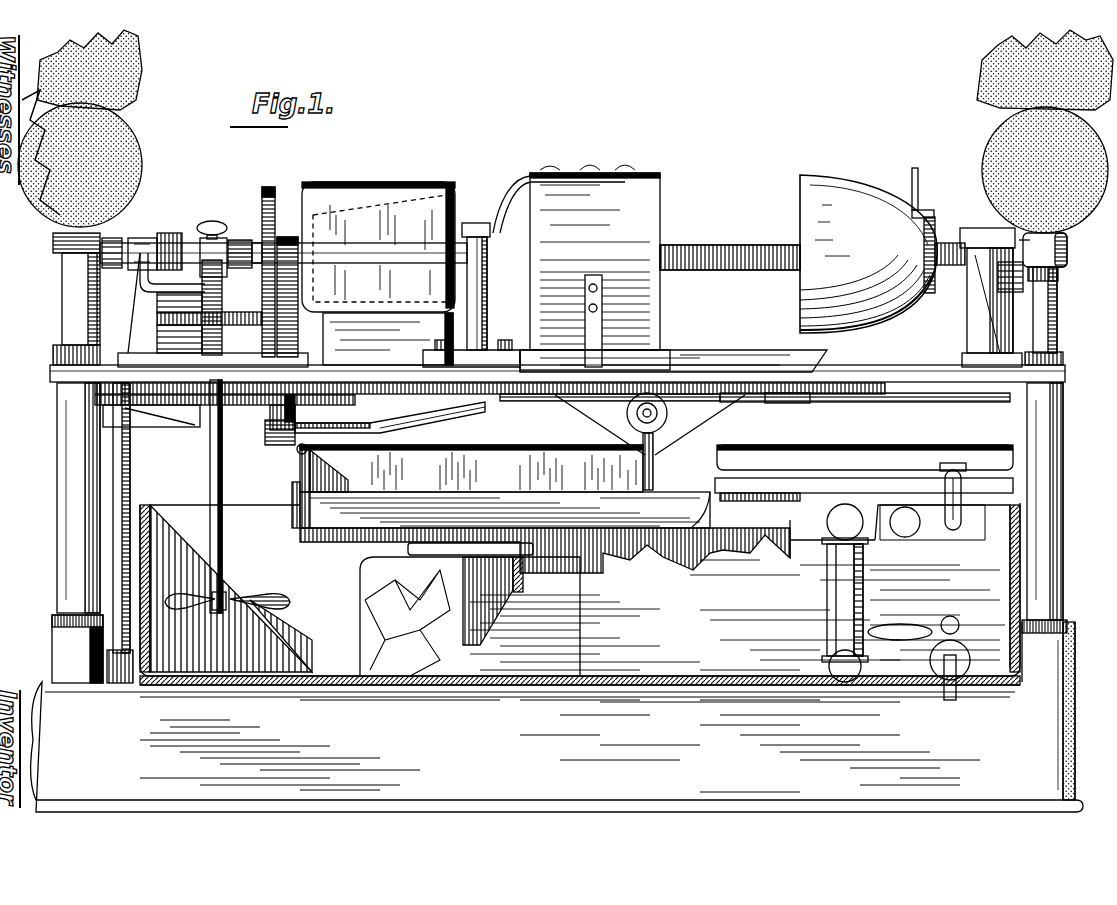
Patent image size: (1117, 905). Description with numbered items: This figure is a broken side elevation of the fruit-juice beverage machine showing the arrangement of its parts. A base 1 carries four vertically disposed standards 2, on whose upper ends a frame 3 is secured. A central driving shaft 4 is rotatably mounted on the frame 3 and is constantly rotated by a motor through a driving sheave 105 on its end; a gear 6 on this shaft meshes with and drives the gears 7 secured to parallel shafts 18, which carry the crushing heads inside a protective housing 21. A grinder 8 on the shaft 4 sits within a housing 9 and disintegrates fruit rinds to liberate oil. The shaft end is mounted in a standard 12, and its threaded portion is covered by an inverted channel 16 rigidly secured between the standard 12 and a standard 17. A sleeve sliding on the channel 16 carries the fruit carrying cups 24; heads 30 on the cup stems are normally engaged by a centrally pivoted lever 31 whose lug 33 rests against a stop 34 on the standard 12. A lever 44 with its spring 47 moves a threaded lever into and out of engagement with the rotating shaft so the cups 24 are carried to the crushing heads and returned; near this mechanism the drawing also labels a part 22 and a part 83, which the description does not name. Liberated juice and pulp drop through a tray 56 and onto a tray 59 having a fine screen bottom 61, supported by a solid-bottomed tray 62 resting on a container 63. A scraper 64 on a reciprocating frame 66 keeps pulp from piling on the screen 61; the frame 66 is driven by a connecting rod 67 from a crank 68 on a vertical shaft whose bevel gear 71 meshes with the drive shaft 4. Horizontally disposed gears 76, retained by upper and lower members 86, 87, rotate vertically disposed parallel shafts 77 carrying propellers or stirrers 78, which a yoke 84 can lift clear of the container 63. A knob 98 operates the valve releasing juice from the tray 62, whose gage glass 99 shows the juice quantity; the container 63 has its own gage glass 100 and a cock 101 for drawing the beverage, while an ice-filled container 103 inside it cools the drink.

The base 1 is at (557, 717).
The standards 2 is at (58, 490).
The frame 3 is at (237, 382).
The central driving shaft 4 is at (237, 243).
The gear 6 is at (268, 187).
The gears 7 is at (282, 237).
The grinder 8 is at (357, 200).
The housing 9 is at (425, 183).
The standard 12 is at (967, 325).
The inverted channel 16 is at (738, 245).
The standard 17 is at (478, 240).
The parallel shafts 18 is at (358, 248).
The protective housing 21 is at (640, 173).
The shaft 22 is at (962, 268).
The fruit carrying cups 24 is at (868, 254).
The head 30 is at (1055, 280).
The centrally pivoted lever 31 is at (1005, 292).
The lug 33 is at (1062, 251).
The stop 34 is at (1000, 250).
The lever 44 is at (912, 170).
The spring 47 is at (938, 232).
The tray 56 is at (737, 350).
The tray 59 is at (555, 450).
The screen bottom 61 is at (360, 488).
The tray 62 is at (597, 534).
The container 63 is at (270, 505).
The scraper 64 is at (665, 440).
The reciprocating frame 66 is at (775, 398).
The connecting rod 67 is at (393, 426).
The crank 68 is at (262, 415).
The bevel gear 71 is at (305, 284).
The horizontally disposed gears 76 is at (238, 320).
The vertically disposed parallel shafts 77 is at (210, 468).
The propellers or stirrers 78 is at (252, 593).
The knob 83 is at (212, 222).
The yoke 84 is at (203, 239).
The upper member 86 is at (140, 268).
The lower member 87 is at (186, 365).
The knob 98 is at (920, 535).
The gage glass 99 is at (965, 510).
The gage glass 100 is at (830, 590).
The cock 101 is at (944, 690).
The container 103 is at (470, 609).
The driving sheave 105 is at (68, 310).